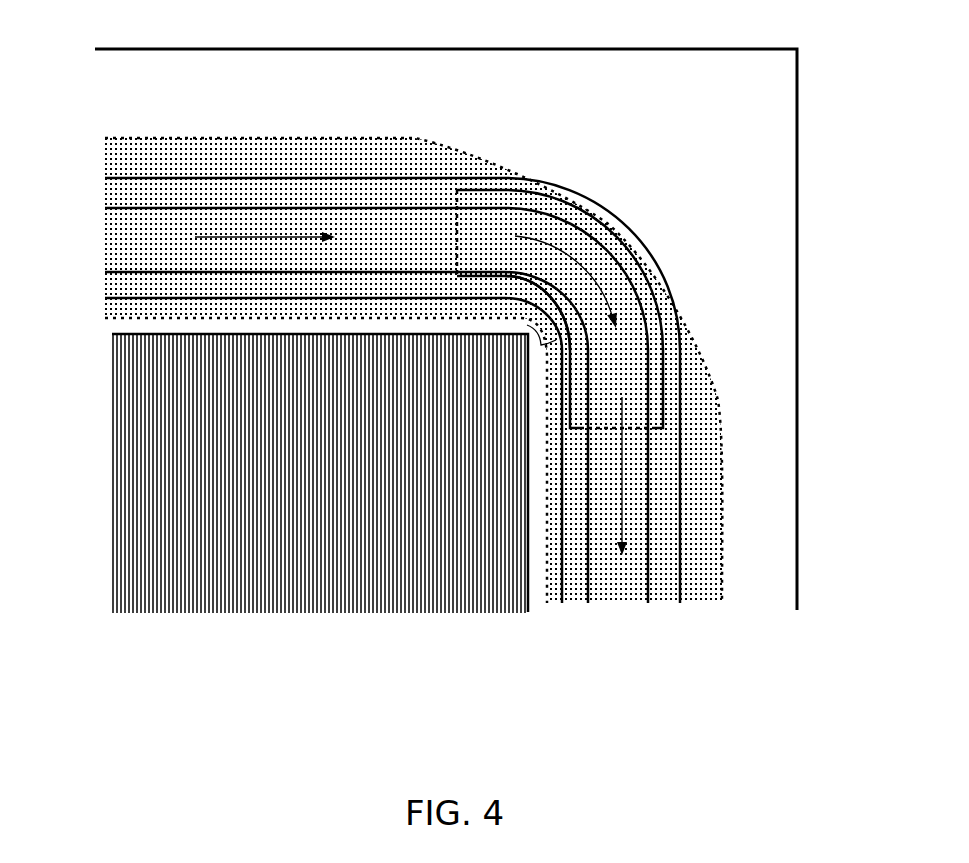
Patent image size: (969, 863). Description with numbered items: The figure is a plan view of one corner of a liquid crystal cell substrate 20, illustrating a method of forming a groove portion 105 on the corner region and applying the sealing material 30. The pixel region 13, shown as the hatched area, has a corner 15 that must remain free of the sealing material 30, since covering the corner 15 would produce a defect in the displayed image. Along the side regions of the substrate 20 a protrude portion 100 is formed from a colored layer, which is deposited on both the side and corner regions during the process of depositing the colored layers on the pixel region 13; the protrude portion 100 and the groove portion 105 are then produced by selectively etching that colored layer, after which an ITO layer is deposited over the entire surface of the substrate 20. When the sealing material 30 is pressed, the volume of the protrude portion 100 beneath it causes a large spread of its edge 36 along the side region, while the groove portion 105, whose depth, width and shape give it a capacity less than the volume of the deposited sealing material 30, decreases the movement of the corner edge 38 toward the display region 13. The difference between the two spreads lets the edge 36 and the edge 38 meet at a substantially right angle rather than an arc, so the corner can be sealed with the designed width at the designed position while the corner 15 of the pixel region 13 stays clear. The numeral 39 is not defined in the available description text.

The substrate 20 is at (493, 47).
The sealing material 30 is at (117, 238).
The edge of the sealing material on the side region 36 is at (143, 138).
The protrude portion 100 is at (123, 178).
The edge of the sealing material on the corner region 38 is at (587, 213).
The corner of the pixel region 15 is at (527, 325).
The groove portion 105 is at (610, 233).
The inner bend 39 is at (560, 295).
The pixel region 13 is at (338, 505).